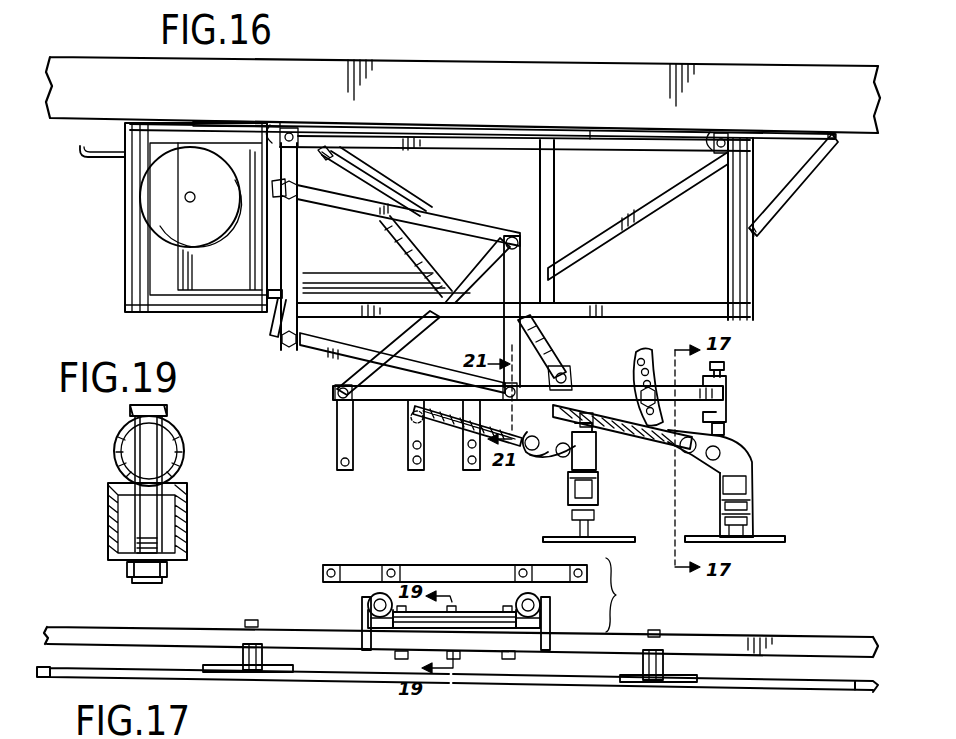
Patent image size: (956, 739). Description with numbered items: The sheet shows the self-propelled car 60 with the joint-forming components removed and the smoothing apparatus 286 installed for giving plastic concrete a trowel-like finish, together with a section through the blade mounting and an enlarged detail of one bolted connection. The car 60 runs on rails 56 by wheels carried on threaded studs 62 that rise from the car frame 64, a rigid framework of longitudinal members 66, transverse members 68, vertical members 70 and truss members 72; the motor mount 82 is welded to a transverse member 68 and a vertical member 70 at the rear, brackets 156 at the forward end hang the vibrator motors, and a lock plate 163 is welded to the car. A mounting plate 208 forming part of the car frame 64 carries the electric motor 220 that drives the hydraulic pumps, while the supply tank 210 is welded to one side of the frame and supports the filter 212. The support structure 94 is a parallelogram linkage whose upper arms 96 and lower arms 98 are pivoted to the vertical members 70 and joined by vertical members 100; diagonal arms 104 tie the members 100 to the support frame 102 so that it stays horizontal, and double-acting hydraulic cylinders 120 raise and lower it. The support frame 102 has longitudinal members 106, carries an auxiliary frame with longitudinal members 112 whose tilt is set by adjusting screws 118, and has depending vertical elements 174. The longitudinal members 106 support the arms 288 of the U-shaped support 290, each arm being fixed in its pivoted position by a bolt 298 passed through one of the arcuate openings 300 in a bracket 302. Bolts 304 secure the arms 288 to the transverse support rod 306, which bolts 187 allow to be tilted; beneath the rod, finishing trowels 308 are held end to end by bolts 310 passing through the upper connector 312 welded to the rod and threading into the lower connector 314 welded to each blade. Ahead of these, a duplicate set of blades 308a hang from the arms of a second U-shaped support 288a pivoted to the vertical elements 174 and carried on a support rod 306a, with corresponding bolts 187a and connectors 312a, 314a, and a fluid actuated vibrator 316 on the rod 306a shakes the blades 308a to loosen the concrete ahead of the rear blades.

In FIG. 16, the rail 56 is at (463, 95).
In FIG. 16, the longitudinal members 66 is at (544, 130).
In FIG. 16, the car frame 64 is at (588, 134).
In FIG. 16, the mounting plate 208 is at (216, 122).
In FIG. 16, the filter 212 is at (196, 217).
In FIG. 16, the electric motor 220 is at (152, 200).
In FIG. 16, the brackets 156 is at (85, 164).
In FIG. 16, the vertical members 70 is at (298, 239).
In FIG. 16, the upper arms 96 is at (465, 220).
In FIG. 16, the support structure 94 is at (432, 218).
In FIG. 16, the vertical members 100 is at (522, 240).
In FIG. 16, the double-acting hydraulic cylinders 120 is at (387, 183).
In FIG. 16, the supply tank 210 is at (386, 270).
In FIG. 16, the truss members 72 is at (654, 212).
In FIG. 16, the motor mount 82 is at (832, 146).
In FIG. 16, the transverse members 68 is at (272, 126).
In FIG. 16, the threaded stud 62 is at (292, 127).
In FIG. 16, the self-propelled car 60 is at (250, 312).
In FIG. 16, the lock plate 163 is at (272, 328).
In FIG. 16, the lower arms 98 is at (303, 358).
In FIG. 16, the support frame 102 is at (559, 364).
In FIG. 16, the diagonal arms 104 is at (412, 334).
In FIG. 16, the vertical elements 174 is at (408, 458).
In FIG. 16, the U-shaped support 288a is at (445, 445).
In FIG. 16, the fluid actuated vibrator 316 is at (556, 457).
In FIG. 16, the pin block 187a is at (552, 438).
In FIG. 16, the smoothing apparatus 286 is at (513, 498).
In FIG. 16, the support rod 306a is at (568, 486).
In FIG. 16, the ring 312a is at (598, 496).
In FIG. 16, the ring 314a is at (598, 513).
In FIG. 16, the blades 308a is at (595, 543).
In FIG. 16, the openings 300 is at (640, 352).
In FIG. 16, the arcuate bracket 302 is at (646, 355).
In FIG. 16, the longitudinal members 106 is at (612, 388).
In FIG. 17, the longitudinal members 106 is at (330, 565).
In FIG. 16, the bolt 298 is at (664, 401).
In FIG. 16, the arms 288 is at (626, 428).
In FIG. 17, the arms 288 is at (366, 600).
In FIG. 16, the bolts 187 is at (660, 452).
In FIG. 16, the U-shaped support 290 is at (660, 464).
In FIG. 19, the U-shaped support 290 is at (185, 452).
In FIG. 16, the adjusting screws 118 is at (722, 362).
In FIG. 16, the bolts 304 is at (746, 440).
In FIG. 19, the bolts 304 is at (167, 410).
In FIG. 17, the bolts 304 is at (485, 611).
In FIG. 16, the support rod 306 is at (748, 485).
In FIG. 19, the support rod 306 is at (187, 506).
In FIG. 17, the support rod 306 is at (716, 638).
In FIG. 16, the connector 312 is at (751, 502).
In FIG. 17, the connector 312 is at (243, 658).
In FIG. 16, the connector 314 is at (751, 520).
In FIG. 17, the connector 314 is at (266, 664).
In FIG. 16, the finishing trowels 308 is at (766, 542).
In FIG. 17, the finishing trowels 308 is at (322, 680).
In FIG. 17, the bolt 310 is at (250, 620).
In FIG. 17, the longitudinal members 112 is at (390, 565).